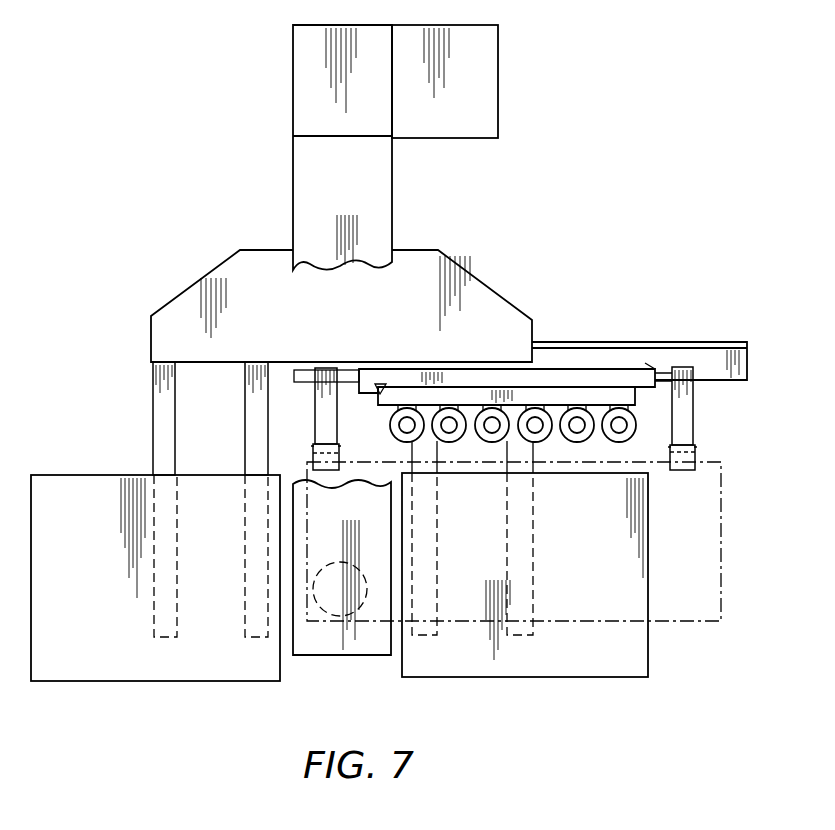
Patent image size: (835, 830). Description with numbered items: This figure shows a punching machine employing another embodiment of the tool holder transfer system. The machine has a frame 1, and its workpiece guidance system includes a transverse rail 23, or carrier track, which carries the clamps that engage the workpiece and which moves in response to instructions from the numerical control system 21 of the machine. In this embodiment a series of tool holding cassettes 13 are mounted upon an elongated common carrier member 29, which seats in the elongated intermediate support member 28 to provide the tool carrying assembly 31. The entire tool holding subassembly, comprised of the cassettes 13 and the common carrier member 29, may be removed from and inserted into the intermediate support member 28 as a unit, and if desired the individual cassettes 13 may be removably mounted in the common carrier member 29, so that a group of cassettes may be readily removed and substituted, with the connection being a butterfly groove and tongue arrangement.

The frame 1 is at (375, 210).
The numerical control system 21 is at (485, 82).
The transverse rail 23 is at (720, 350).
The intermediate support member 28 is at (617, 376).
The common carrier member 29 is at (567, 394).
The tool carrying assembly 31 is at (383, 387).
The tool holding cassettes 13 is at (615, 444).